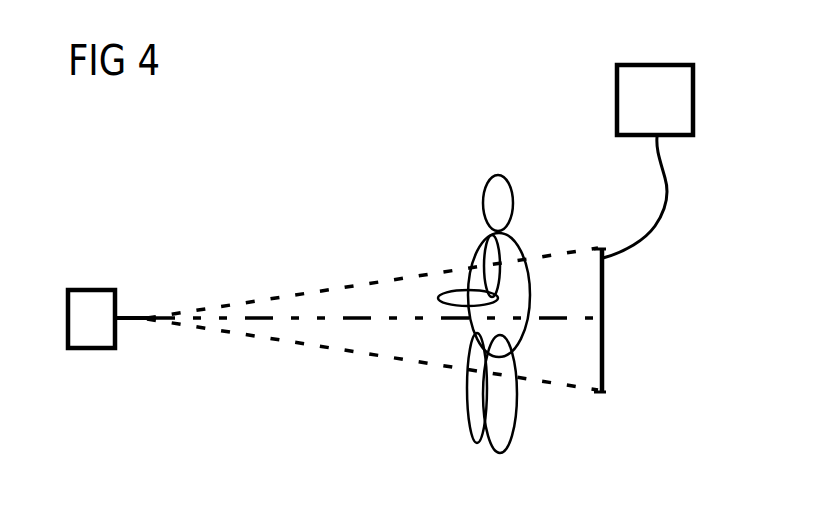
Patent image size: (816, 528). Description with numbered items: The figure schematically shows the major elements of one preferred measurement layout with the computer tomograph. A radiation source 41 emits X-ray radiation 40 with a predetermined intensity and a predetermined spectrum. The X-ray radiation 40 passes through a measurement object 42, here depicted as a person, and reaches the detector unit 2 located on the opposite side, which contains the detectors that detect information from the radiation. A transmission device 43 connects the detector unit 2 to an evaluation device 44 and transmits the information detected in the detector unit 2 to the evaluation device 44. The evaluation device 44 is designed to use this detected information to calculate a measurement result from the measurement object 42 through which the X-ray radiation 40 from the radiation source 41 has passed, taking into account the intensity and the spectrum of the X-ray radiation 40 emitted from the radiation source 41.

The detector unit 2 is at (605, 278).
The X-ray radiation 40 is at (248, 318).
The radiation source 41 is at (92, 352).
The measurement object 42 is at (492, 450).
The transmission device 43 is at (667, 205).
The evaluation device 44 is at (697, 92).